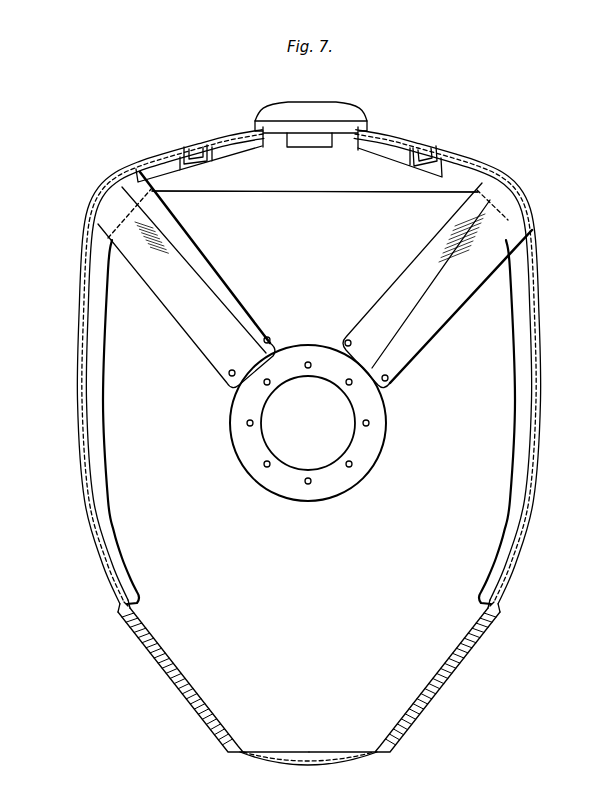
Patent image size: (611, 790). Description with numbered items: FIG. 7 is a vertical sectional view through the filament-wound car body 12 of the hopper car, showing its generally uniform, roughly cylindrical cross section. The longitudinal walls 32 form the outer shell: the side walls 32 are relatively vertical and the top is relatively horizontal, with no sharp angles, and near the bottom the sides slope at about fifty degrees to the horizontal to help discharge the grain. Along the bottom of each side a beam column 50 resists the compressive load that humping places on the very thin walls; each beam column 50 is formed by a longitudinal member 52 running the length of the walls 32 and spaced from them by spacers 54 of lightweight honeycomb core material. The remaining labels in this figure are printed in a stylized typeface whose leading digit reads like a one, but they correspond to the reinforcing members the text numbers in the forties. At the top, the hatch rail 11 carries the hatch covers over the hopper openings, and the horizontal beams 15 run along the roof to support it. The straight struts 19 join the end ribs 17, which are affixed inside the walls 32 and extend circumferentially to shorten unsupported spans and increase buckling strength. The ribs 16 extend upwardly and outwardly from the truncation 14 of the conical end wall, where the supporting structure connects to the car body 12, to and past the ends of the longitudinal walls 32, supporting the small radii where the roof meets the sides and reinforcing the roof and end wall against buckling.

The filler cap 11 is at (302, 103).
The car body 12 is at (282, 233).
The ring flange 14 is at (372, 441).
The clip 15 is at (193, 146).
The strut 16 is at (383, 317).
The inner wall 17 is at (112, 542).
The mounting plate 19 is at (300, 173).
The longitudinal walls 32 is at (170, 684).
The beam columns 50 is at (299, 686).
The longitudinal members 52 is at (145, 642).
The spacers 54 is at (200, 713).